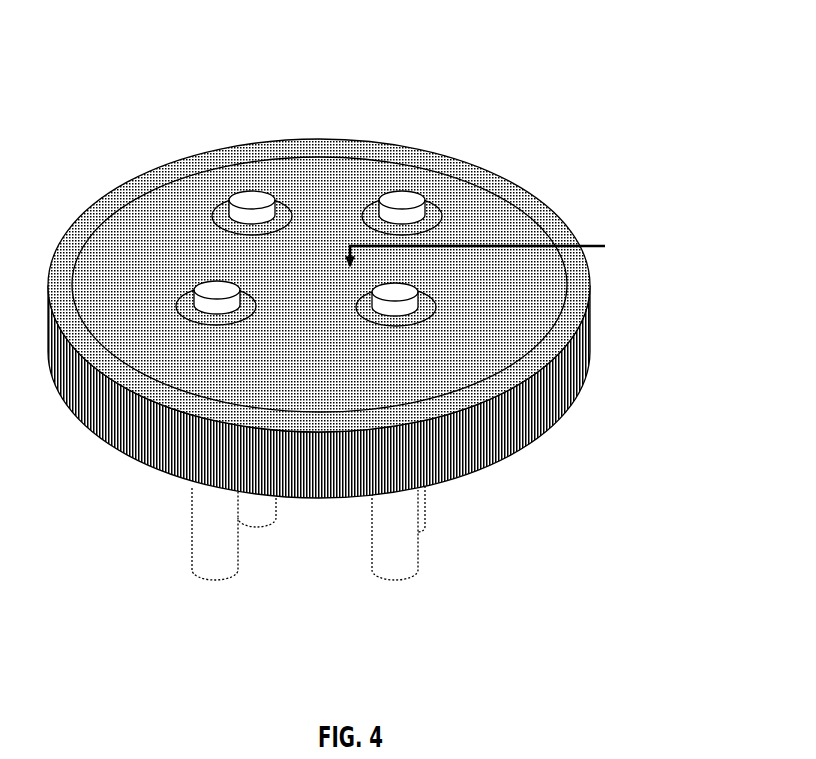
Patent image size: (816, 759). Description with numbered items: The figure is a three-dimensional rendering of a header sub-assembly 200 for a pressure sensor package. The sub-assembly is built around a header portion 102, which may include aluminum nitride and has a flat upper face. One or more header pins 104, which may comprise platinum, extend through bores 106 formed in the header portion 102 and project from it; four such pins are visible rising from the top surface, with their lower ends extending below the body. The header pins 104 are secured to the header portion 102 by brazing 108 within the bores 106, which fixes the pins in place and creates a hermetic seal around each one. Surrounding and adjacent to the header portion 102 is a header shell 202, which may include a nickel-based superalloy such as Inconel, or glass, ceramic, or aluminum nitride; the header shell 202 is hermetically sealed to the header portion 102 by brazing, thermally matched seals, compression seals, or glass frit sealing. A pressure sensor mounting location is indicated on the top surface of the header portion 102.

The header sub-assembly 200 is at (375, 304).
The header portion 102 is at (296, 193).
The header pins 104 is at (406, 295).
The bores 106 is at (187, 298).
The brazing 108 is at (448, 216).
The header shell 202 is at (162, 446).